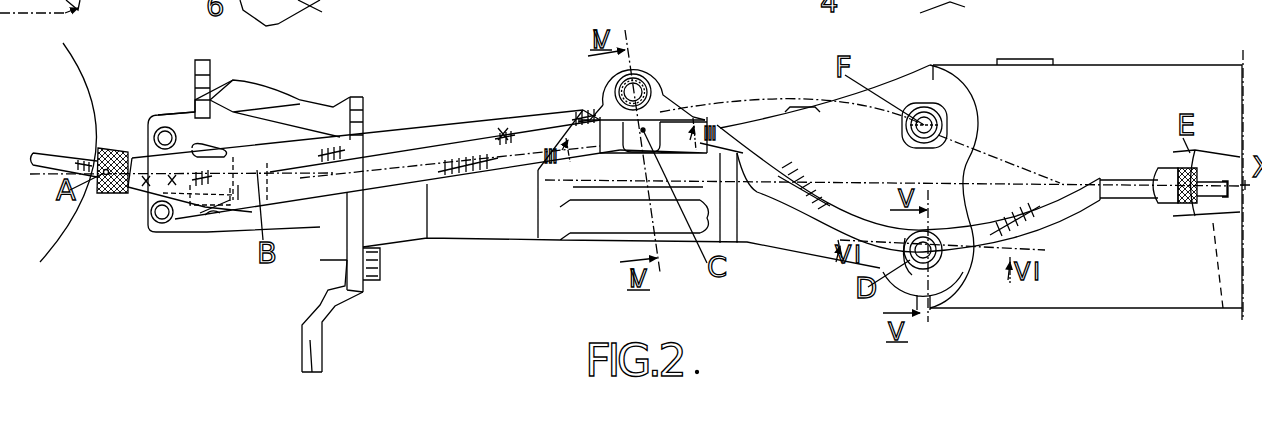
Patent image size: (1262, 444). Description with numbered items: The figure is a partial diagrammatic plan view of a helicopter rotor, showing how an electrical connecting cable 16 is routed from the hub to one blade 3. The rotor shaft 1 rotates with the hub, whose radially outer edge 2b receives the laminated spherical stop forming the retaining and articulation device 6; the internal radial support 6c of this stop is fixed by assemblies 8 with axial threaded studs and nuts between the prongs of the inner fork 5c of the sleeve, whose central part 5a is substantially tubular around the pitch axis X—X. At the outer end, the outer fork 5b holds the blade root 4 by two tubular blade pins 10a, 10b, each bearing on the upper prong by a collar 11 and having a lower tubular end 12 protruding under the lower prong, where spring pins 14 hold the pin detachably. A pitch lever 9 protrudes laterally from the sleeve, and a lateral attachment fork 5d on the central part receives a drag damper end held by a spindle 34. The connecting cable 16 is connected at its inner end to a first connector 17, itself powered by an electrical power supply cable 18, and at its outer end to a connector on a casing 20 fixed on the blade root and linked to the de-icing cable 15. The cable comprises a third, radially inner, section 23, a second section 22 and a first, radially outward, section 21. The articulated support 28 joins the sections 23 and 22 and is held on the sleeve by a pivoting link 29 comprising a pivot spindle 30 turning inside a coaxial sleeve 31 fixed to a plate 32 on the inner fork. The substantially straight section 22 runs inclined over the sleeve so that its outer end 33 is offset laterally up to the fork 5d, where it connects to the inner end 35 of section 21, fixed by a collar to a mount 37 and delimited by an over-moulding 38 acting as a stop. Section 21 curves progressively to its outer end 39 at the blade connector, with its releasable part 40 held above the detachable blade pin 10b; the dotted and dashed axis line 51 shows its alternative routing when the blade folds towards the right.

The rotor shaft 1 is at (80, 10).
The radially outer edge of the hub plate 2b is at (294, 17).
The blade 3 is at (1193, 63).
The blade root 4 is at (900, 76).
The central part of the sleeve 5a is at (497, 220).
The outer fork of the sleeve 5b is at (962, 105).
The inner fork of the sleeve 5c is at (313, 222).
The attachment fork 5d is at (647, 63).
The retaining and articulation device 6 is at (232, 104).
The internal radial support 6c is at (184, 110).
The assemblies with axial threaded studs and nuts 8 is at (160, 130).
The pitch lever 9 is at (300, 350).
The blade pin 10a is at (983, 0).
The blade pin 10b is at (947, 272).
The collar 11 is at (947, 128).
The lower tubular end 12 is at (877, 14).
The spring pins 14 is at (934, 14).
The cable of the de-icing equipment conductors 15 is at (1223, 308).
The electrical connecting cable 16 is at (526, 183).
The first connector 17 is at (121, 148).
The electrical power supply cable 18 is at (63, 157).
The casing 20 is at (1213, 167).
The first section of cable 21 is at (823, 220).
The second section of cable 22 is at (389, 128).
The third section of cable 23 is at (135, 200).
The articulated support 28 is at (264, 138).
The link 29 is at (208, 228).
The pivot spindle 30 is at (237, 186).
The coaxial sleeve 31 is at (200, 213).
The plate 32 is at (208, 73).
The radially outer end of the second section 33 is at (557, 128).
The spindle 34 is at (649, 85).
The radially inner end of the first section 35 is at (592, 120).
The mount 37 is at (655, 97).
The over-moulding 38 is at (693, 121).
The radially outer end of the first section 39 is at (1133, 190).
The releasable part 40 is at (940, 274).
The dotted and dashed axis line 51 is at (807, 94).